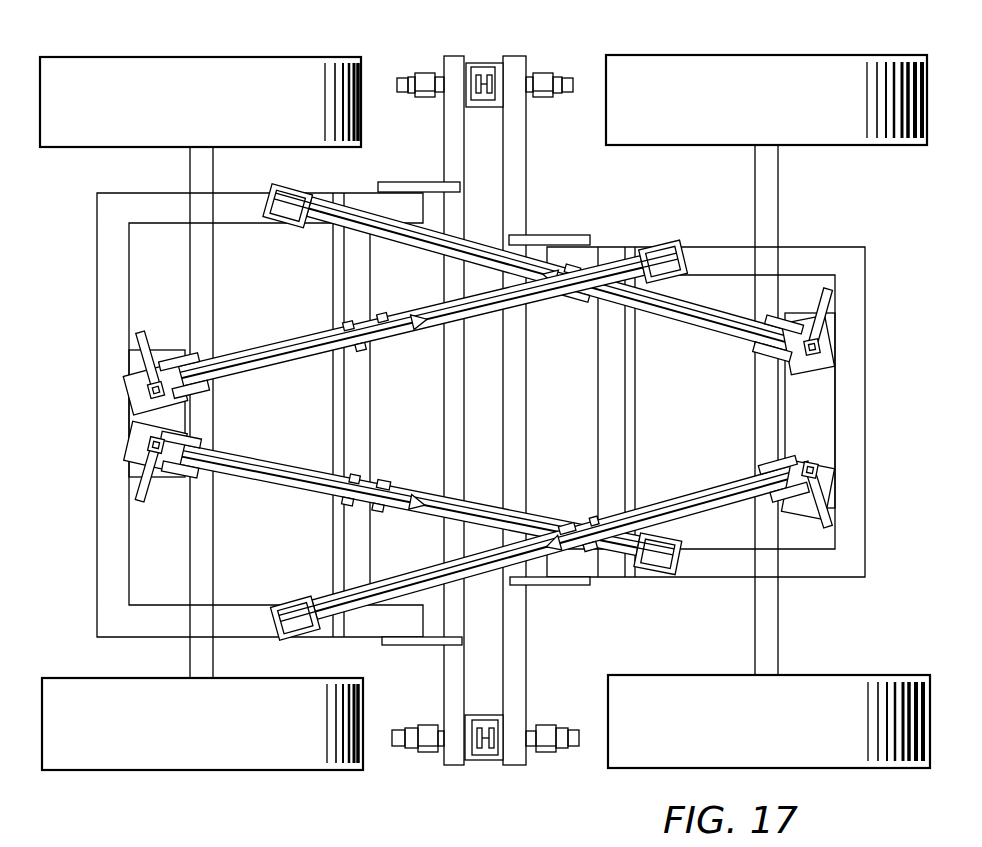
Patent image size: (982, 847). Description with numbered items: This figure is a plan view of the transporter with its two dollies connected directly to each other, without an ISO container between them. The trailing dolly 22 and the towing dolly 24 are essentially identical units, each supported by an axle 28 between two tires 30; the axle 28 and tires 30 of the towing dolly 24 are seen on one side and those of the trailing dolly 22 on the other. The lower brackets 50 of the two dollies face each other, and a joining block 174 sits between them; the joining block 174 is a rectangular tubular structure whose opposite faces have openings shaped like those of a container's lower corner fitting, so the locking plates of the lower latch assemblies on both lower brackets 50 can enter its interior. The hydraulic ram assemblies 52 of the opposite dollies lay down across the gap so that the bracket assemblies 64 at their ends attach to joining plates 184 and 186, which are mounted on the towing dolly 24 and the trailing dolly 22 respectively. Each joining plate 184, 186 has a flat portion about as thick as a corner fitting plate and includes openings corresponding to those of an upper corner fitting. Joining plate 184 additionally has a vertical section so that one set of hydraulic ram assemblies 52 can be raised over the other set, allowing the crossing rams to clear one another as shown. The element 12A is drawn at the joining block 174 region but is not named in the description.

The trailing dolly 22 is at (199, 41).
The towing dolly 24 is at (809, 40).
The axle 28 is at (768, 639).
The tire 30 is at (755, 726).
The lower bracket 50 is at (519, 696).
The hydraulic ram assembly 52 is at (483, 245).
The bracket assembly 64 is at (153, 357).
The joining block 174 is at (489, 736).
The clip member 12A is at (491, 737).
The joining plate 184 is at (827, 400).
The joining plate 186 is at (128, 368).